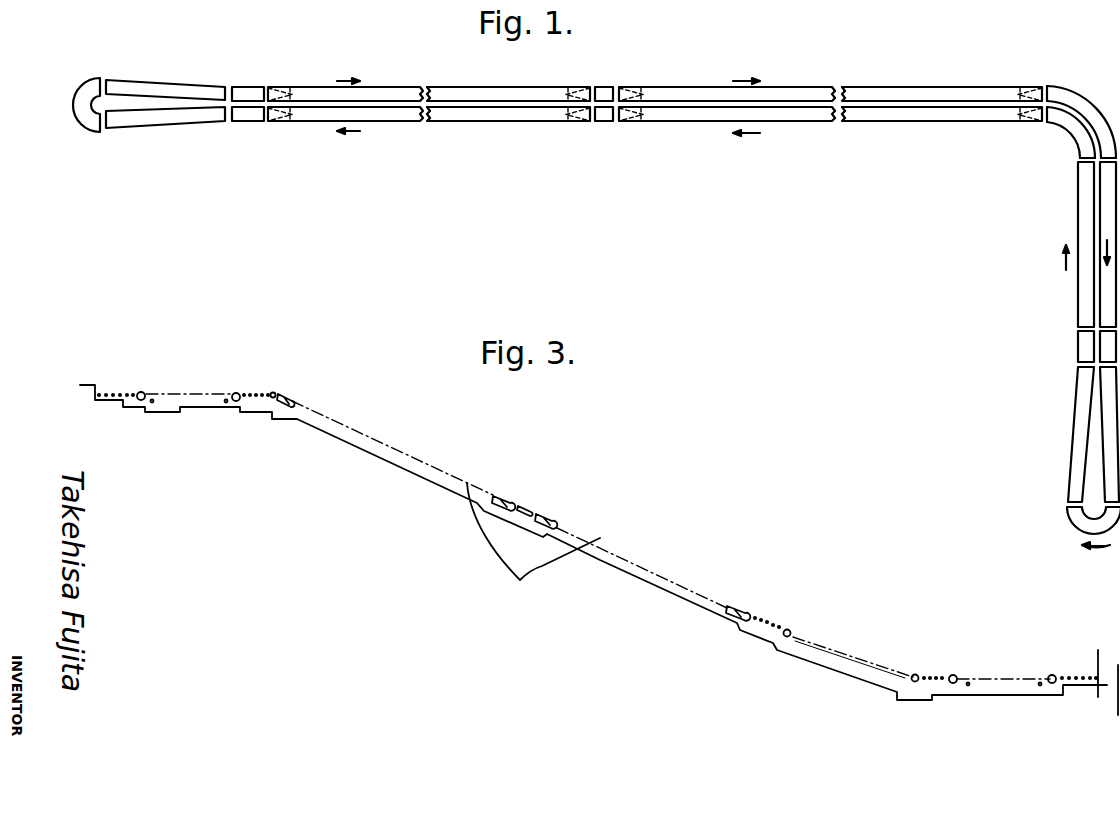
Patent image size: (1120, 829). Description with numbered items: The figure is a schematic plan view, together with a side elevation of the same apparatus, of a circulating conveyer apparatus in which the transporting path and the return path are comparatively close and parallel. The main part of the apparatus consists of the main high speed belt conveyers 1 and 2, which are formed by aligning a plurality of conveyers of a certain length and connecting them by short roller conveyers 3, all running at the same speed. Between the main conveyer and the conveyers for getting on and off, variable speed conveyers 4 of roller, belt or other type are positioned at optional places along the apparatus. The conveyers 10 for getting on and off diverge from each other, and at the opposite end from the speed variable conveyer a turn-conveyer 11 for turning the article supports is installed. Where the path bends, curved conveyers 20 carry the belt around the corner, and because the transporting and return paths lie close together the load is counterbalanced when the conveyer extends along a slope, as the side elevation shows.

In FIG. 1, the main high speed belt conveyer 1 is at (380, 117).
In FIG. 3, the main high speed belt conveyer 1 is at (853, 655).
In FIG. 1, the main high speed belt conveyer 2 is at (378, 91).
In FIG. 1, the short roller conveyer 3 is at (607, 123).
In FIG. 3, the short roller conveyer 3 is at (525, 505).
In FIG. 1, the variable speed conveyer 4 is at (252, 117).
In FIG. 3, the variable speed conveyer 4 is at (262, 399).
In FIG. 1, the conveyer for getting on and off 10 is at (160, 118).
In FIG. 3, the conveyer for getting on and off 10 is at (190, 398).
In FIG. 1, the turn-conveyer 11 is at (82, 105).
In FIG. 3, the turn-conveyer 11 is at (111, 398).
In FIG. 1, the curved conveyer 20 is at (1060, 98).
In FIG. 3, the curved conveyer 20 is at (763, 620).